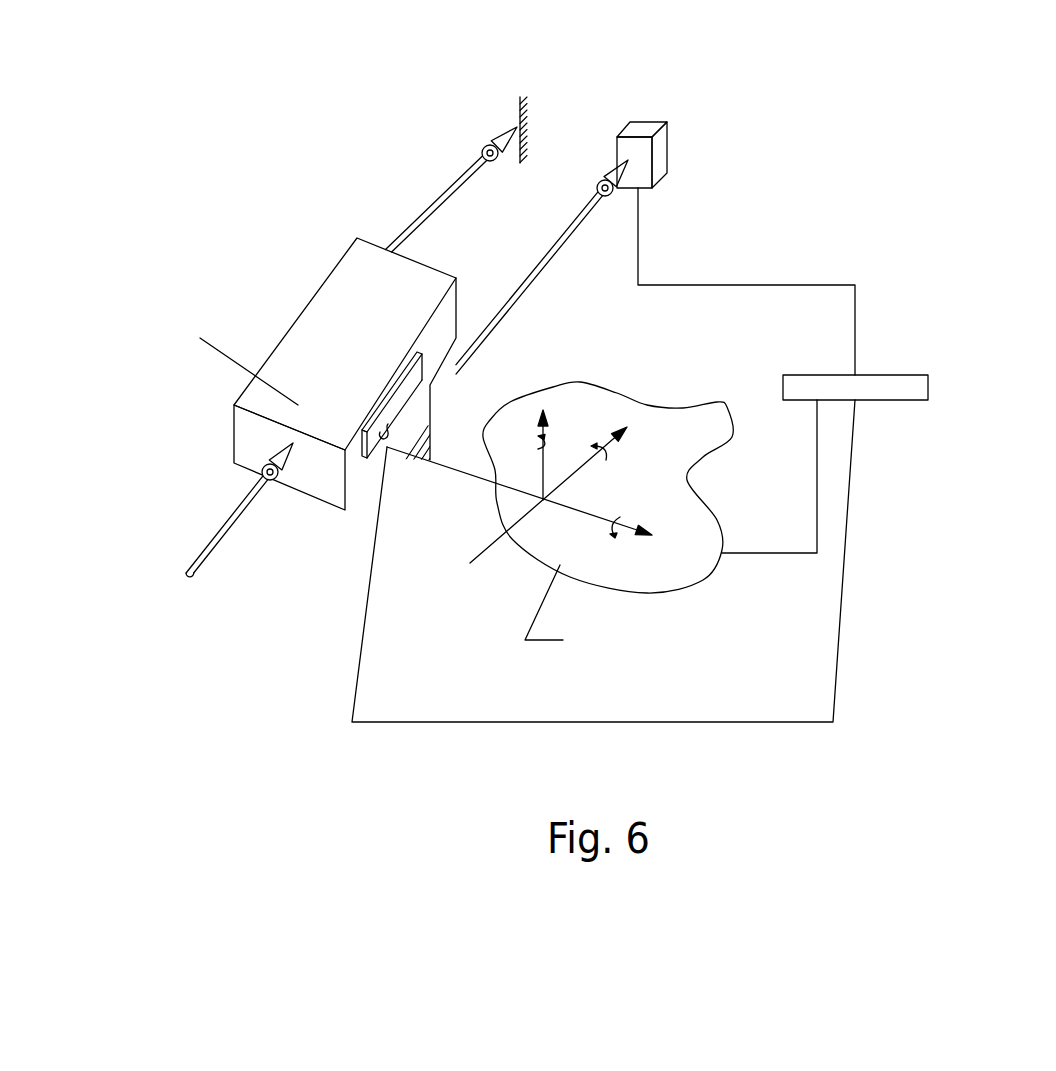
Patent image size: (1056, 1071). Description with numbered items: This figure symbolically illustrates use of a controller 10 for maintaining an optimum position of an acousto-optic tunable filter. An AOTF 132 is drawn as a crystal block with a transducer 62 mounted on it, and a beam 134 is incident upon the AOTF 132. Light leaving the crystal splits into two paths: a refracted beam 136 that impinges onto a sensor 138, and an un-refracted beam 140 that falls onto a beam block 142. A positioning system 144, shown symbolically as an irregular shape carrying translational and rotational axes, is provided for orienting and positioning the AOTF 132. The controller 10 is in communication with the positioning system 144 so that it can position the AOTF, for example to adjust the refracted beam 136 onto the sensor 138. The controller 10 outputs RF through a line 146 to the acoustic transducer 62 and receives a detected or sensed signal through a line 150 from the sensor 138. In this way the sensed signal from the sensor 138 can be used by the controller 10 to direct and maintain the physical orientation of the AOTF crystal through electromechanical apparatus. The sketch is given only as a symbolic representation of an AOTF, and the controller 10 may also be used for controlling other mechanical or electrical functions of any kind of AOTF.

The AOTF 132 is at (362, 215).
The transducer 62 is at (379, 413).
The beam 134 is at (188, 514).
The un-refracted beam 140 is at (450, 193).
The beam block 142 is at (541, 140).
The refracted beam 136 is at (568, 225).
The sensor 138 is at (652, 120).
The line 150 is at (786, 284).
The controller 10 is at (867, 377).
The line 146 is at (680, 724).
The positioning system 144 is at (711, 481).